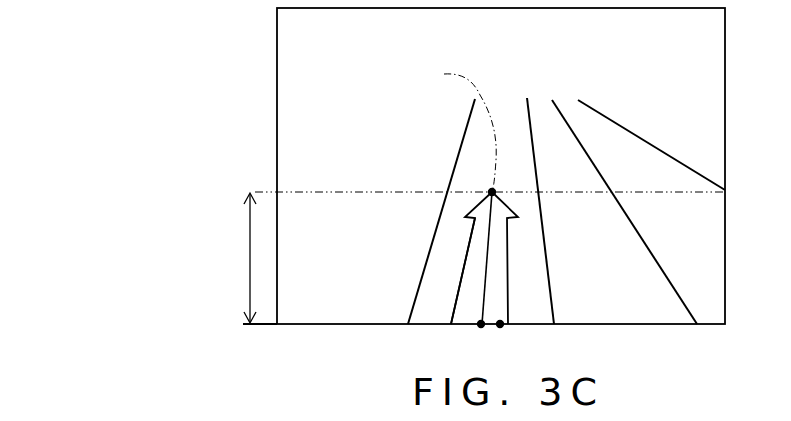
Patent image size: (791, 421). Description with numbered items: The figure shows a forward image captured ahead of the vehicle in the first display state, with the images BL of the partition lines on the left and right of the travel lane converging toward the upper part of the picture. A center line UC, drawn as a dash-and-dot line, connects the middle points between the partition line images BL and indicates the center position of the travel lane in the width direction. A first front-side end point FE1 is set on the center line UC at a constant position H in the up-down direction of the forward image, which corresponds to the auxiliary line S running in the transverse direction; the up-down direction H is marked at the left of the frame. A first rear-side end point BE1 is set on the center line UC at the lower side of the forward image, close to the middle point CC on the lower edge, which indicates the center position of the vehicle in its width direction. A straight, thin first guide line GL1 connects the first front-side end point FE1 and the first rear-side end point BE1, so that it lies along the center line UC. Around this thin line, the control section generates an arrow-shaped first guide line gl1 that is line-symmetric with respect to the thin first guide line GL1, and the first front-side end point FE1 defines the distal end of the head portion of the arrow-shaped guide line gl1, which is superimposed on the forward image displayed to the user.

The auxiliary line S is at (298, 191).
The constant position in the up-down direction H is at (223, 262).
The images of partition lines BL is at (528, 106).
The center line UC is at (449, 127).
The first front-side end point FE1 is at (492, 192).
The first guide line GL1 is at (487, 264).
The arrow-shaped first guide line gl1 is at (458, 297).
The first rear-side end point BE1 is at (480, 327).
The middle point CC is at (502, 327).